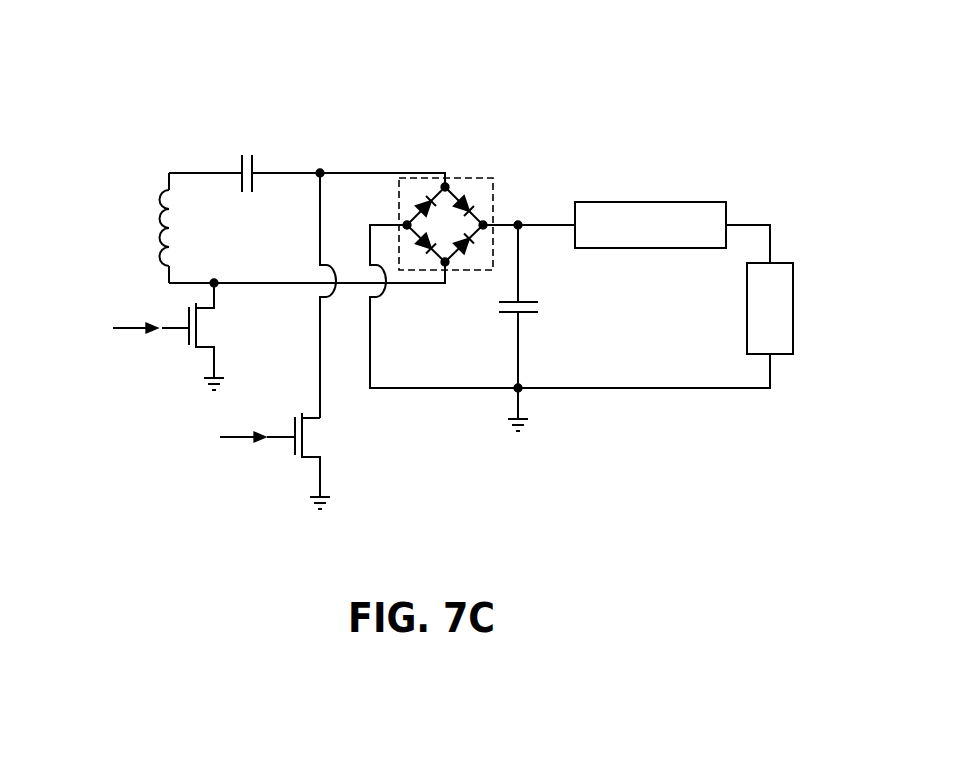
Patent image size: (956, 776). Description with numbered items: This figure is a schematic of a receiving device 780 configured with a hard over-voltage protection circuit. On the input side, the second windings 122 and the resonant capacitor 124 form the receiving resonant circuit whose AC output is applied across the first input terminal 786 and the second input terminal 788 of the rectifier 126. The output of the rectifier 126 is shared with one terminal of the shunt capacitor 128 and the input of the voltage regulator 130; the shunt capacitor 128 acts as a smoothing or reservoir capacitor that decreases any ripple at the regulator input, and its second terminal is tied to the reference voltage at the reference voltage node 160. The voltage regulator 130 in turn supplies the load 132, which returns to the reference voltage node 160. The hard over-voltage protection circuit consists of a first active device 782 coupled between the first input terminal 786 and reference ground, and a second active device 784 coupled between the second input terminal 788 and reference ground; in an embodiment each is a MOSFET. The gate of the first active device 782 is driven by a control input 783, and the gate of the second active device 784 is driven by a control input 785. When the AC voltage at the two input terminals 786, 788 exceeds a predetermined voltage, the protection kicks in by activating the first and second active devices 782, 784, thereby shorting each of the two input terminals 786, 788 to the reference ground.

The receiving device 780 is at (733, 65).
The resonant capacitor 124 is at (240, 162).
The second windings 122 is at (172, 232).
The first input terminal 786 is at (322, 170).
The second input terminal 788 is at (216, 281).
The second active device 784 is at (218, 328).
The control signal input 785 is at (134, 322).
The first active device 782 is at (326, 440).
The control signal input 783 is at (232, 440).
The rectifier 126 is at (496, 188).
The shunt capacitor 128 is at (540, 309).
The voltage regulator 130 is at (660, 201).
The load 132 is at (746, 313).
The VREF node 160 is at (516, 392).